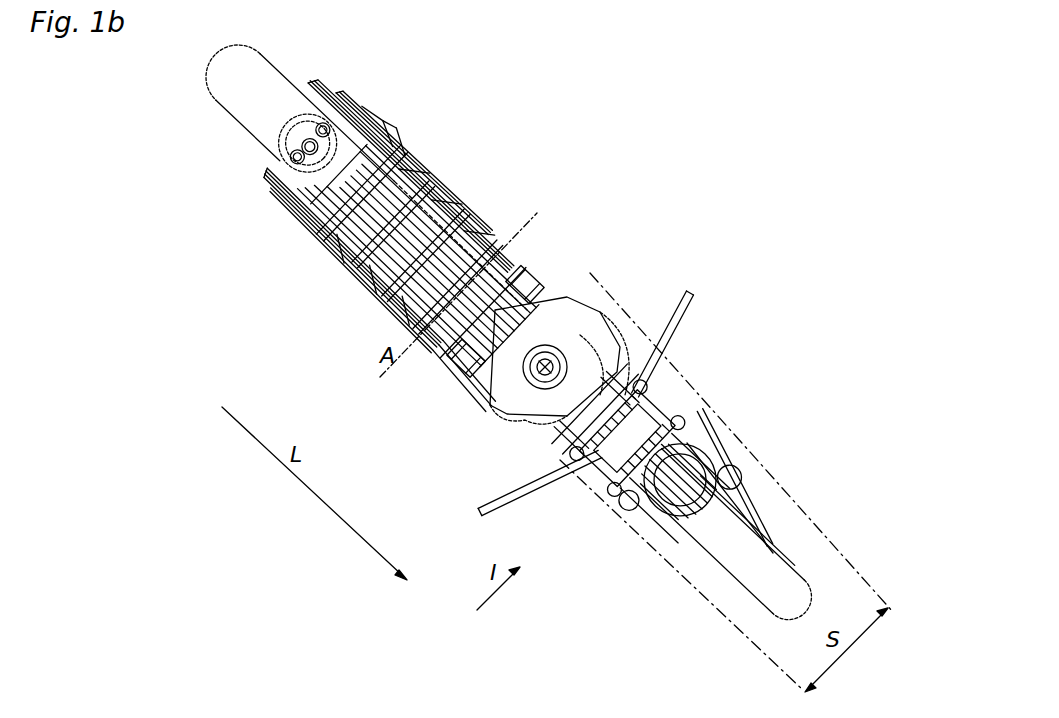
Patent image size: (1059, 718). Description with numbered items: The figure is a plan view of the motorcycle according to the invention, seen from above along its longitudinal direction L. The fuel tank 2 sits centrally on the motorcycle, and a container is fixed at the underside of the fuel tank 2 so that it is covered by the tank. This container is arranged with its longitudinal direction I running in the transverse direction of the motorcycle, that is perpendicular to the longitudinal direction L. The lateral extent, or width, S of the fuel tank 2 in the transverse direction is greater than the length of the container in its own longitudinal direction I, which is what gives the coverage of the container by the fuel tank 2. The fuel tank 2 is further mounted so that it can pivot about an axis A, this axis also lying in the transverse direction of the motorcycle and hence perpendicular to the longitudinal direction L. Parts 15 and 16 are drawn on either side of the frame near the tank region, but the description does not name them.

The fuel tank 2 is at (570, 347).
The upper bracket 15 is at (523, 287).
The lower bracket 16 is at (468, 360).